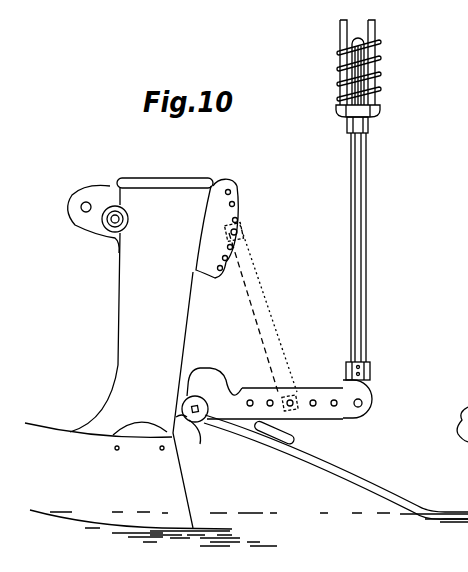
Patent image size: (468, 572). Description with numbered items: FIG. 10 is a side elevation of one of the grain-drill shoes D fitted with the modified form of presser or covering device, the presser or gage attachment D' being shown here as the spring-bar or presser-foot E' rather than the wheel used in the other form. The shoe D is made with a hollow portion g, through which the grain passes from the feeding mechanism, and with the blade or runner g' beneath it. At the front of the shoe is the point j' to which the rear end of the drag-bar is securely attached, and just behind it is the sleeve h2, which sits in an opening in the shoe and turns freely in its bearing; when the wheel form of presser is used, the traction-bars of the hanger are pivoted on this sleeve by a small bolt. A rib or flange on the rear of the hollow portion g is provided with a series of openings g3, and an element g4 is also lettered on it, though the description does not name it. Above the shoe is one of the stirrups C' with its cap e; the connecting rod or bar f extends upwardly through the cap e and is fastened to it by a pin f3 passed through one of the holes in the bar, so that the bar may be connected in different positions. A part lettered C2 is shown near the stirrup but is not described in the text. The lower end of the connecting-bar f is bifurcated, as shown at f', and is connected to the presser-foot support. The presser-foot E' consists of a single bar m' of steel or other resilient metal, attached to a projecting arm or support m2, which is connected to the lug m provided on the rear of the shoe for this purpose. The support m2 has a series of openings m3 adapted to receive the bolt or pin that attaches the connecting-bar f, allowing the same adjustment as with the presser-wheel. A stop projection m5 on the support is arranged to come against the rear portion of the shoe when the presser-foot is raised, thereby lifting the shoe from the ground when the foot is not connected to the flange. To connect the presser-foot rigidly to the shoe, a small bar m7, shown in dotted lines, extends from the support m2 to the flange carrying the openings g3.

The stirrup C' is at (336, 58).
The coil spring C2 is at (379, 55).
The cap e is at (353, 109).
The pin f3 is at (372, 125).
The connecting rod or bar f is at (397, 225).
The bifurcated lower end f' is at (384, 390).
The hollow portion g is at (153, 353).
The openings g3 is at (231, 192).
The pivot block g4 is at (222, 234).
The point of attachment j' is at (78, 204).
The sleeve h2 is at (112, 225).
The blade or runner g' is at (98, 452).
The shoe D is at (153, 448).
The lug m is at (209, 417).
The stop projection m5 is at (187, 369).
The openings m3 is at (313, 400).
The projecting arm or support m2 is at (258, 388).
The small bar m7 is at (259, 289).
The presser or gage attachment D' is at (273, 308).
The bar m' is at (336, 467).
The spring-bar or presser-foot E' is at (394, 464).